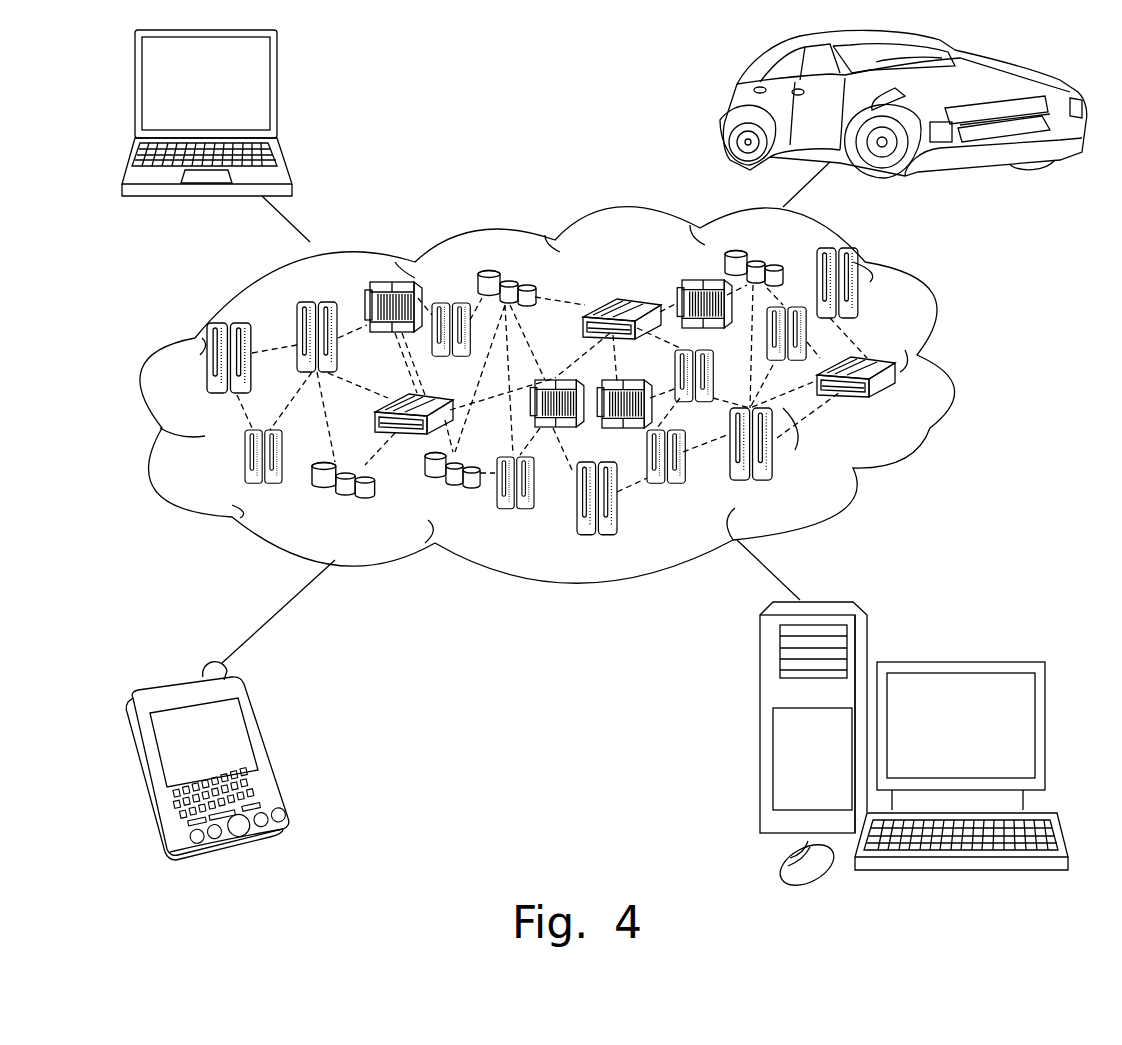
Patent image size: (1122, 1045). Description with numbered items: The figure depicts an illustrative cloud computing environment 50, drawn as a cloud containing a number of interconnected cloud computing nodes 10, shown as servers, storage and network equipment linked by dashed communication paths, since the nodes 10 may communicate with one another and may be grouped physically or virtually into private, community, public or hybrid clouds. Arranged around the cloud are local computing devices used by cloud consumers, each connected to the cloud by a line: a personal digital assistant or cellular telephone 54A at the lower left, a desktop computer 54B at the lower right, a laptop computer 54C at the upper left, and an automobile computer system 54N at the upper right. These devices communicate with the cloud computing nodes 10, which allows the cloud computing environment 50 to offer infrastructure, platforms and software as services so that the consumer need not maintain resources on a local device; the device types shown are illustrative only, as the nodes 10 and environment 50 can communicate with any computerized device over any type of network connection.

The cloud computing node 10 is at (903, 402).
The cloud computing environment 50 is at (958, 372).
The personal digital assistant or cellular telephone 54A is at (272, 757).
The desktop computer 54B is at (958, 662).
The laptop computer 54C is at (281, 96).
The automobile computer system 54N is at (731, 112).